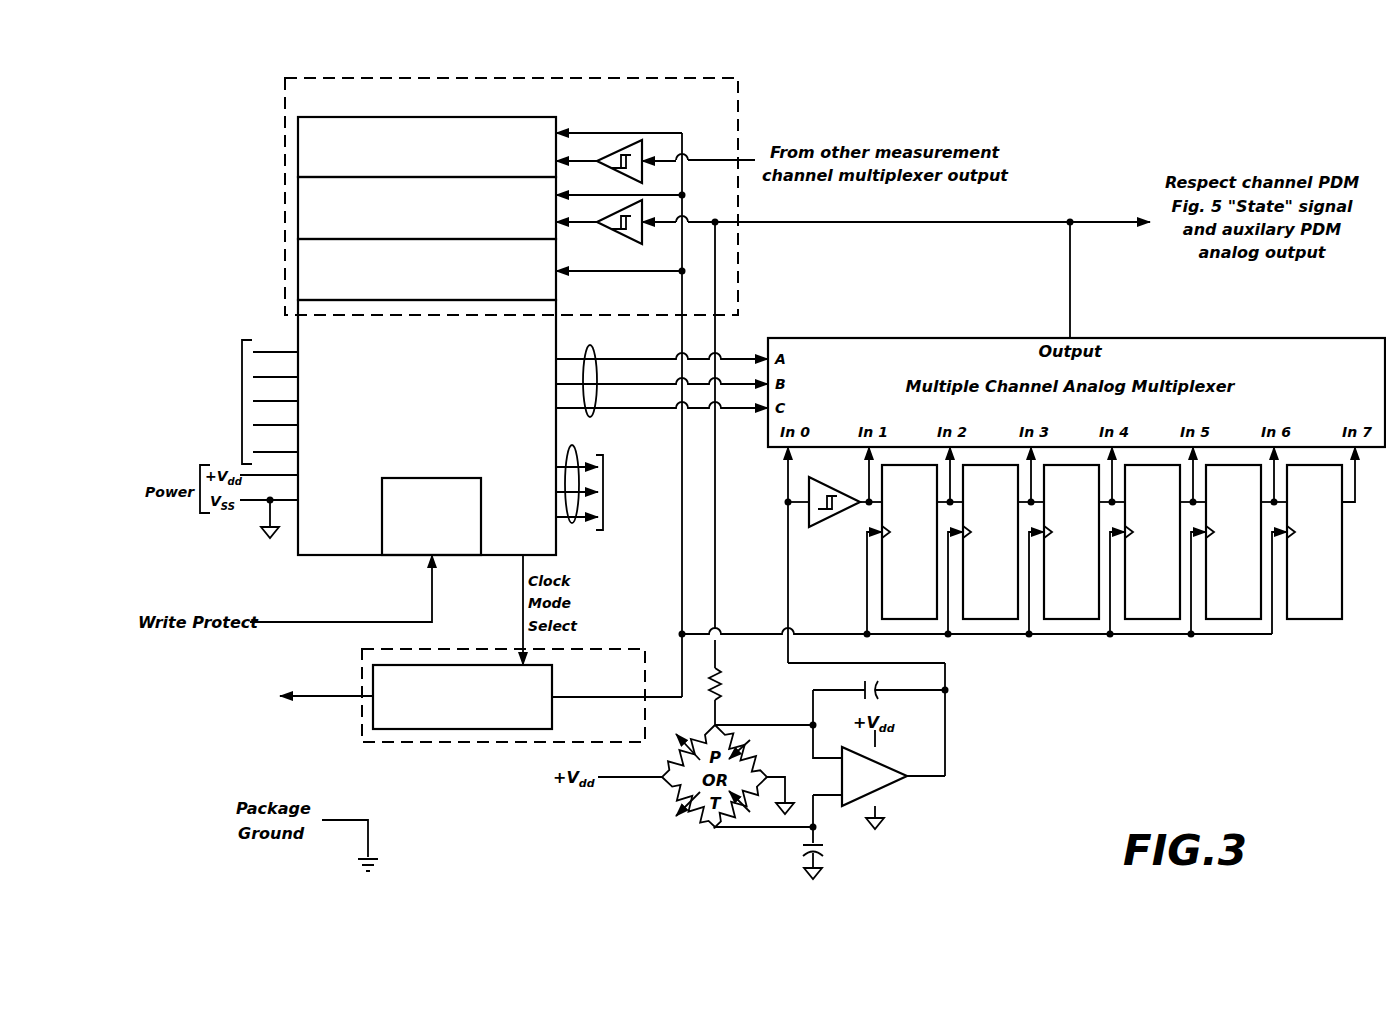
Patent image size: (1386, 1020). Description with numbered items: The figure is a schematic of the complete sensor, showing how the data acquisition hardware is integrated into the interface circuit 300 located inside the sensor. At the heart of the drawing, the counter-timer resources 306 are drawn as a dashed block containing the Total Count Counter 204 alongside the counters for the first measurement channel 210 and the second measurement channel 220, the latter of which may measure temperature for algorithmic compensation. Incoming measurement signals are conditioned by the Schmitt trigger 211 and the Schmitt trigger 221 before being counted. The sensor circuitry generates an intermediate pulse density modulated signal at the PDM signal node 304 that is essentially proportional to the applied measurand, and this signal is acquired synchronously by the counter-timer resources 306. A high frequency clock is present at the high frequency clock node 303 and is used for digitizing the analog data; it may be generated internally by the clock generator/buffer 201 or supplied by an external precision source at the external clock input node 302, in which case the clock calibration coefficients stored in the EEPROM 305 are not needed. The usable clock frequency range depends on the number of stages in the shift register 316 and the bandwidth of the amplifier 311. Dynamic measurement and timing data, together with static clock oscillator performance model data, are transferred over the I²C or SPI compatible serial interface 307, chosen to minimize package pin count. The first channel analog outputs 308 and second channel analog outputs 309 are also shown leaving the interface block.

The clock generator/buffer 201 is at (458, 742).
The Total Count Counter 204 is at (298, 267).
The first measurement channel 210 is at (298, 208).
The Schmitt trigger 211 is at (609, 237).
The second measurement channel 220 is at (298, 165).
The Schmitt trigger 221 is at (608, 150).
The interface circuit 300 is at (1087, 740).
The external clock input node 302 is at (343, 696).
The high frequency clock node 303 is at (682, 587).
The PDM signal node 304 is at (315, 324).
The EEPROM 305 is at (395, 555).
The counter-timer resources 306 is at (285, 120).
The serial interface 307 is at (179, 321).
The first channel analog outputs 308 is at (594, 346).
The second channel analog outputs 309 is at (578, 447).
The amplifier 311 is at (896, 785).
The shift register 316 is at (1312, 718).